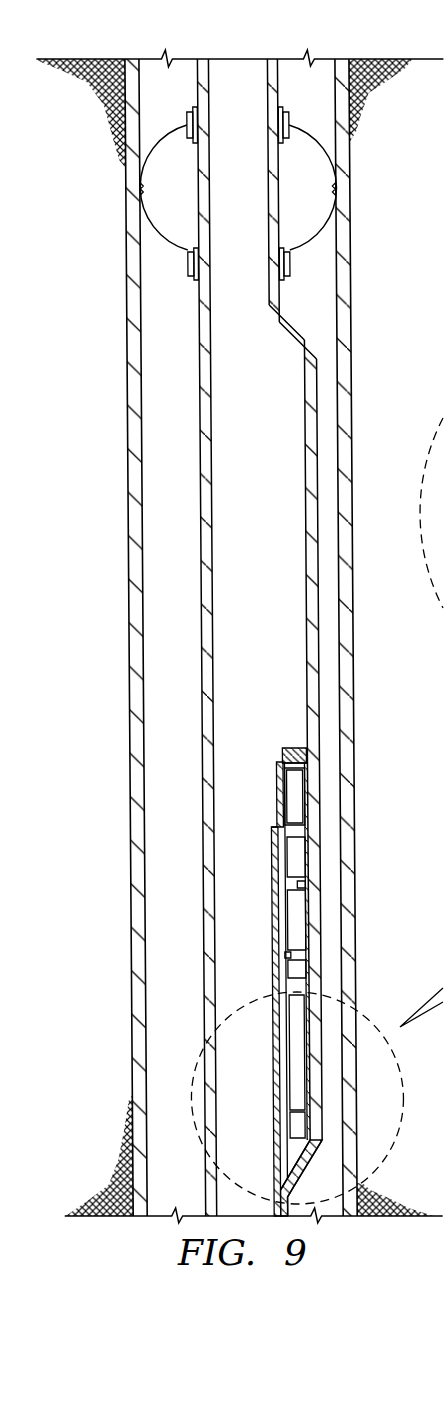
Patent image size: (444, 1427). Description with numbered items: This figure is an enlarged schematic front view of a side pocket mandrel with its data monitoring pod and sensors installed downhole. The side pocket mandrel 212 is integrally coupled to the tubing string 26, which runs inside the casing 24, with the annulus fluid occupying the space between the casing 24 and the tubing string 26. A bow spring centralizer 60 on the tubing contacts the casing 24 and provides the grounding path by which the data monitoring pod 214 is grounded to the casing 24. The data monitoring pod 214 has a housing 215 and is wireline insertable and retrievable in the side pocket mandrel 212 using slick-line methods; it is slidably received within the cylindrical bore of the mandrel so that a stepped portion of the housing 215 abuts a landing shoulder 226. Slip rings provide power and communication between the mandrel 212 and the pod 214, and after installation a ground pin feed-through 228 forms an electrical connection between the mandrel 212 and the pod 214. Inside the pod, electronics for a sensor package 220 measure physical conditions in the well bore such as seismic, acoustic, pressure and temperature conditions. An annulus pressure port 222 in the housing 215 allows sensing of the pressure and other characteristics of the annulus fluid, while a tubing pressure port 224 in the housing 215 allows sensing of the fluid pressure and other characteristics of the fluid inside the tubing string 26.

The casing 24 is at (348, 186).
The tubing string 26 is at (197, 69).
The bow spring centralizer 60 is at (162, 246).
The side pocket mandrel 212 is at (288, 331).
The data monitoring pod 214 is at (295, 749).
The housing 215 is at (272, 763).
The sensor package 220 is at (290, 790).
The annulus pressure port 222 is at (311, 884).
The tubing pressure port 224 is at (260, 954).
The landing shoulder 226 is at (311, 997).
The ground pin feed-through 228 is at (292, 1158).